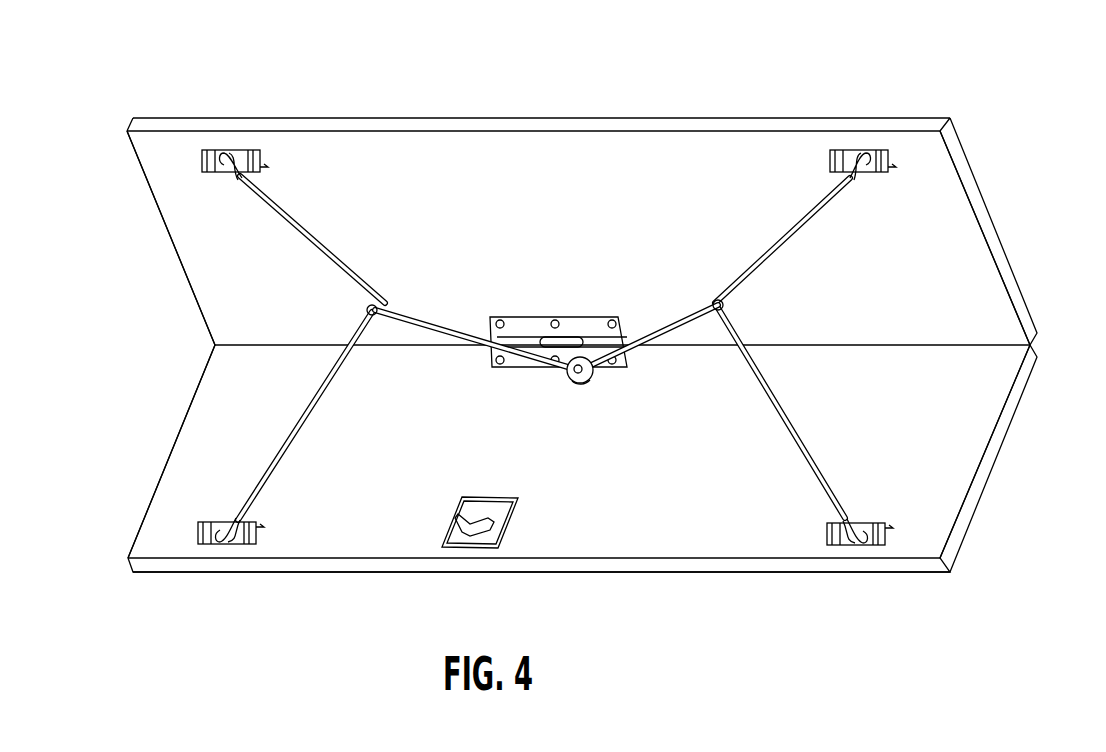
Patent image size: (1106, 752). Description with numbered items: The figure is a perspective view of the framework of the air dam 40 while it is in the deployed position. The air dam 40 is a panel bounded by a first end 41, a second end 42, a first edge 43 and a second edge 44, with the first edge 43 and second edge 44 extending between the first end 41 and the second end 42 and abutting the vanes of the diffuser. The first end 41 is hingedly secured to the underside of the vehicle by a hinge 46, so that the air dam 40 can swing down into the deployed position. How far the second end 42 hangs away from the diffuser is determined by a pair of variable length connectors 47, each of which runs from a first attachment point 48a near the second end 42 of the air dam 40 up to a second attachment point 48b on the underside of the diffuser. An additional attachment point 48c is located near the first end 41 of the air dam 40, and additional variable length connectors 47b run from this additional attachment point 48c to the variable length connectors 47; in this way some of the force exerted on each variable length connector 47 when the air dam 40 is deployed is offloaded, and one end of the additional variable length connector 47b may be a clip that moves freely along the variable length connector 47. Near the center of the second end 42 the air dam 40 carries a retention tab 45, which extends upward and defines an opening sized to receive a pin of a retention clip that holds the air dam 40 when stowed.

The air dam 40 is at (680, 538).
The first end 41 is at (400, 352).
The second end 42 is at (278, 567).
The first edge 43 is at (162, 455).
The second edge 44 is at (1000, 447).
The retention tab 45 is at (470, 542).
The hinge 46 is at (548, 318).
The variable length connector 47 is at (273, 215).
The additional variable length connector 47b is at (455, 330).
The first attachment point 48a is at (212, 547).
The second attachment point 48b is at (238, 148).
The additional attachment point 48c is at (598, 380).